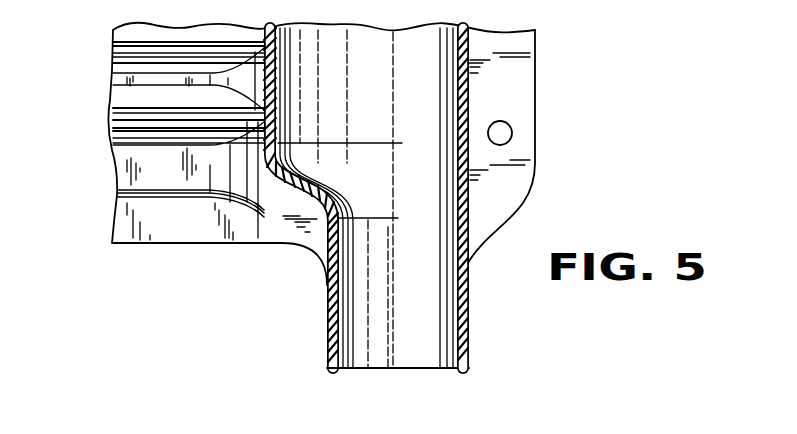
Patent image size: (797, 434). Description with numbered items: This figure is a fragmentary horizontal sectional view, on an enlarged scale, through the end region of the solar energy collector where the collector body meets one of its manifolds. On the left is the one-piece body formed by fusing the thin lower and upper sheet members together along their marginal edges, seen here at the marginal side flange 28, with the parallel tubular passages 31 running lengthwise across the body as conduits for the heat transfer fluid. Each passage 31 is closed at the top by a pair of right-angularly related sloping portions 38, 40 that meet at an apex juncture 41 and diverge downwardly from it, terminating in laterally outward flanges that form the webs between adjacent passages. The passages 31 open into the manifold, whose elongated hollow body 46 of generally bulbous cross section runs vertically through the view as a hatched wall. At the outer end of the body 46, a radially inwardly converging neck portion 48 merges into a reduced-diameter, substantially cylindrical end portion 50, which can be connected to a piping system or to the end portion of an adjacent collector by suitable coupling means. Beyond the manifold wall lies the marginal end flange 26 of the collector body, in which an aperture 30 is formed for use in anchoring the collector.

The marginal end flange 26 is at (530, 70).
The marginal side flange 28 is at (127, 218).
The aperture 30 is at (510, 133).
The tubular passage 31 is at (100, 96).
The sloping portion 38 is at (125, 106).
The sloping portion 40 is at (134, 142).
The apex juncture 41 is at (128, 138).
The hollow body 46 is at (467, 60).
The neck portion 48 is at (298, 202).
The end portion 50 is at (443, 338).